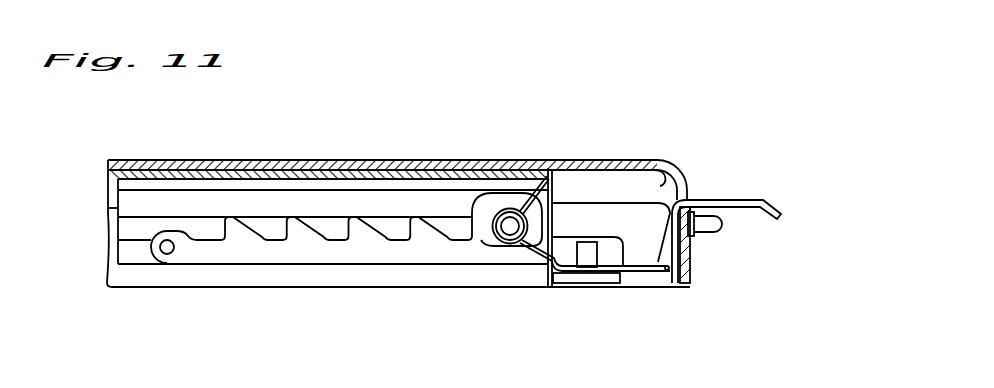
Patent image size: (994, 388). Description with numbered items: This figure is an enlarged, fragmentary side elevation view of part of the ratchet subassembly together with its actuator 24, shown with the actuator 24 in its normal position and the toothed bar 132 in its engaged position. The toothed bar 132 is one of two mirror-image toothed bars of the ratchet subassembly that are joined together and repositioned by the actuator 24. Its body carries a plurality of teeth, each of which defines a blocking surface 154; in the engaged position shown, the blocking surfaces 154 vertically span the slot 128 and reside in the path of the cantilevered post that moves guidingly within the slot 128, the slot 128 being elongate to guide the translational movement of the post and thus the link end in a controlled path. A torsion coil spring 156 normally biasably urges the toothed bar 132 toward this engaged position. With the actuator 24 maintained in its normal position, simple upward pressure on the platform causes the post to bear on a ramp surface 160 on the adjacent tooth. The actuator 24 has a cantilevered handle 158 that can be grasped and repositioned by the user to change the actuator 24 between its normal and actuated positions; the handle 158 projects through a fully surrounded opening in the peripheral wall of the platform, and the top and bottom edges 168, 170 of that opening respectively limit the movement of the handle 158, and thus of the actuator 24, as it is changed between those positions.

The actuator 24 is at (743, 215).
The slot 128 is at (252, 218).
The first toothed bar 132 is at (448, 250).
The blocking surface 154 is at (413, 219).
The torsion coil spring 156 is at (540, 176).
The cantilevered handle 158 is at (770, 200).
The ramp surface 160 is at (432, 222).
The top edge 168 is at (673, 178).
The bottom edge 170 is at (684, 181).